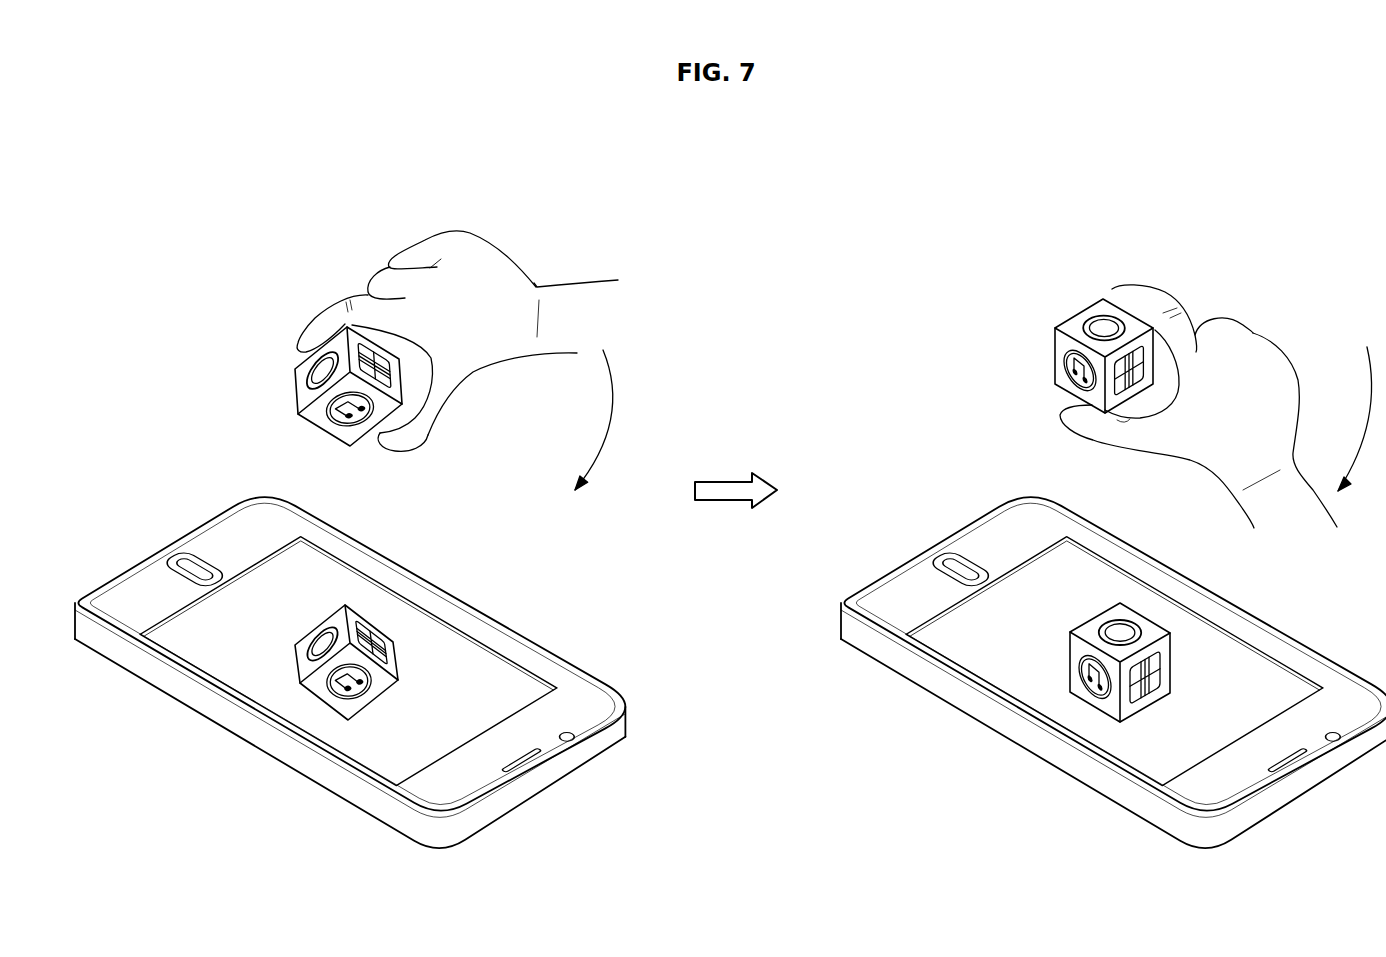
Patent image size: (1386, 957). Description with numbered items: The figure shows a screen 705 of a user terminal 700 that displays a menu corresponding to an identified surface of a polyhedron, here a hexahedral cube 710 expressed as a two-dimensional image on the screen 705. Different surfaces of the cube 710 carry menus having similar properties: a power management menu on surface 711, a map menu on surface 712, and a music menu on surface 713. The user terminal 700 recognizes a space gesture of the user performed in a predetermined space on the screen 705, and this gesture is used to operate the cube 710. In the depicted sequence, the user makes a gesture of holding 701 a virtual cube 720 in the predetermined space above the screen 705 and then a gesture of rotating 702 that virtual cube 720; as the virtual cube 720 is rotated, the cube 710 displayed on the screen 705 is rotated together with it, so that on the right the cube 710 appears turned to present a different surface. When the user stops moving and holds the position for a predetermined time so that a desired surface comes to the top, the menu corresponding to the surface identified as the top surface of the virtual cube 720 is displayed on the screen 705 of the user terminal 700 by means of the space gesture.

The user terminal 700 is at (563, 661).
The gesture of holding 701 is at (508, 268).
The gesture of rotating 702 is at (1247, 335).
The screen 705 is at (479, 636).
The polyhedron (cube) 710 is at (663, 676).
The power management menu surface 711 is at (326, 640).
The map menu surface 712 is at (377, 632).
The music menu surface 713 is at (352, 696).
The virtual cube 720 is at (294, 371).